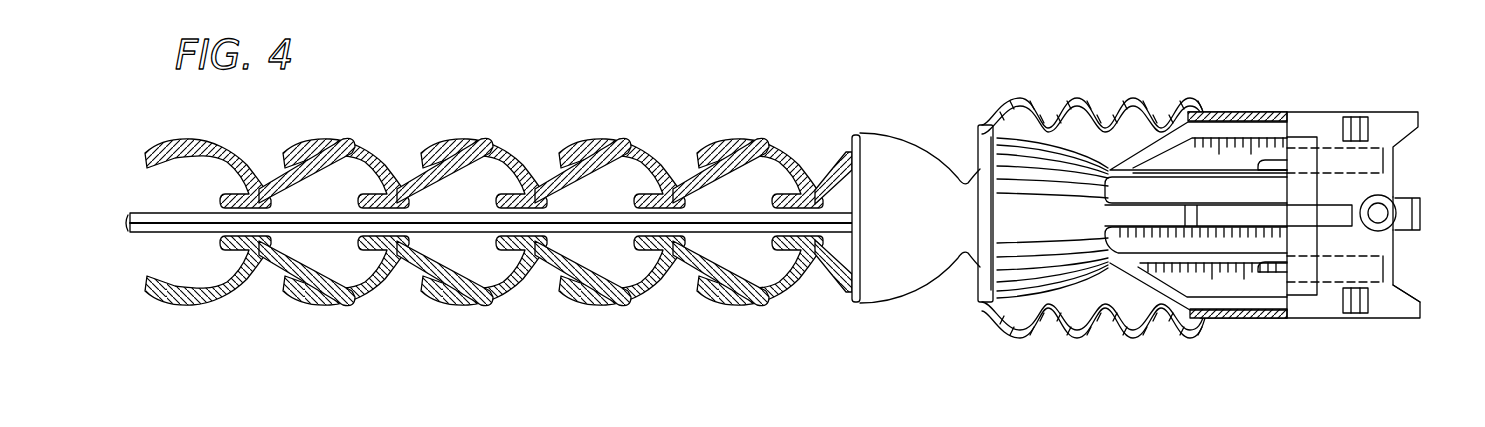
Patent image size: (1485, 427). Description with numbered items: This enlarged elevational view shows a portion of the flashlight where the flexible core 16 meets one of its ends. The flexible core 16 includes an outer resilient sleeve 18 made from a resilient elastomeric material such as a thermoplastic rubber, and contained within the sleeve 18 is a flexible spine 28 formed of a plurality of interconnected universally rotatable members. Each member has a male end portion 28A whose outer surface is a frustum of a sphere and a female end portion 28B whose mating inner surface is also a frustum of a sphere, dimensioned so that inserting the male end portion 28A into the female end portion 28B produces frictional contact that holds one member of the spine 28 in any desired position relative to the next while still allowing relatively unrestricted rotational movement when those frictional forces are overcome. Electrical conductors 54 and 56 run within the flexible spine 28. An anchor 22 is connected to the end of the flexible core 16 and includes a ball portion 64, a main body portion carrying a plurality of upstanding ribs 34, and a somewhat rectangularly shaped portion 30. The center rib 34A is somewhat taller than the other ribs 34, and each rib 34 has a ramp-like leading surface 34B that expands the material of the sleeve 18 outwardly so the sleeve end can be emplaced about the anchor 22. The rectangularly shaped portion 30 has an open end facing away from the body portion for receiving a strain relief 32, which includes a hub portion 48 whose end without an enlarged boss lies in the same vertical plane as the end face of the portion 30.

The flexible core 16 is at (937, 118).
The outer resilient sleeve 18 is at (1078, 338).
The anchor 22 is at (1267, 130).
The flexible spine 28 is at (893, 168).
The male end portion 28A is at (338, 160).
The female end portion 28B is at (320, 150).
The rectangularly shaped portion 30 is at (1390, 308).
The strain relief 32 is at (1393, 238).
The upstanding ribs 34 is at (1215, 240).
The center rib 34A is at (1145, 192).
The ramp-like leading surface 34B is at (1232, 188).
The hub portion 48 is at (1388, 197).
The electrical conductor 54 is at (181, 214).
The electrical conductor 56 is at (184, 236).
The ball portion 64 is at (1020, 270).